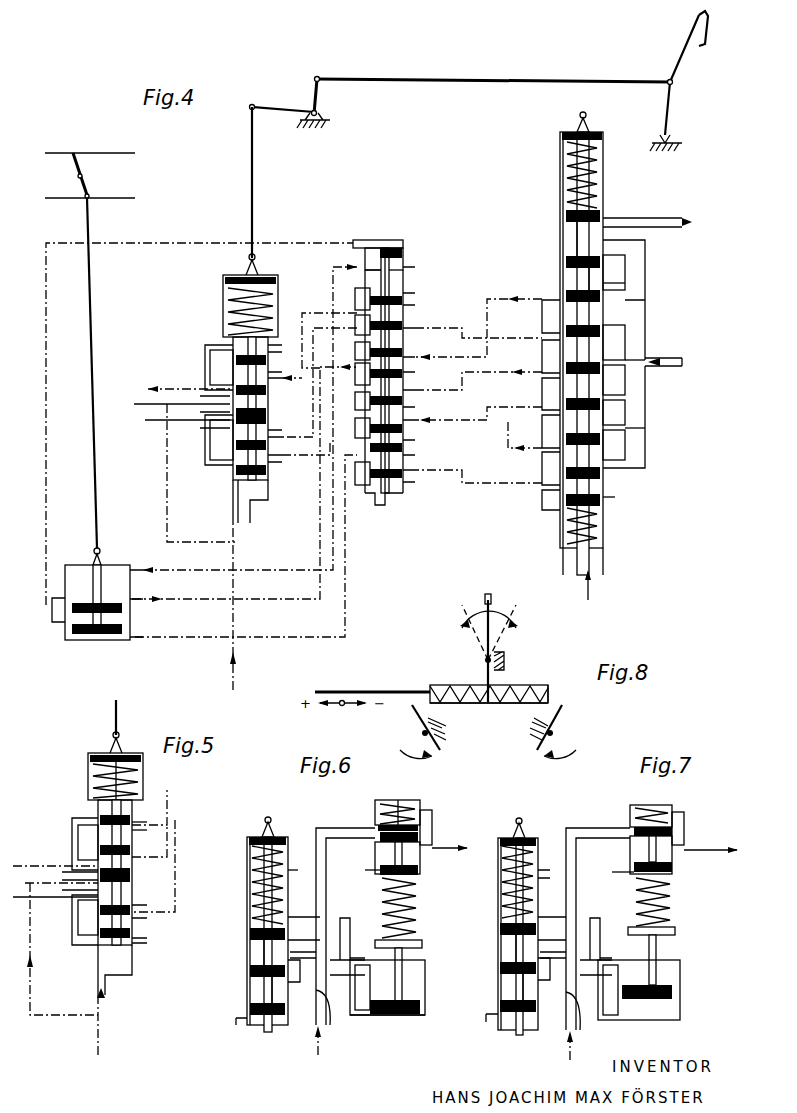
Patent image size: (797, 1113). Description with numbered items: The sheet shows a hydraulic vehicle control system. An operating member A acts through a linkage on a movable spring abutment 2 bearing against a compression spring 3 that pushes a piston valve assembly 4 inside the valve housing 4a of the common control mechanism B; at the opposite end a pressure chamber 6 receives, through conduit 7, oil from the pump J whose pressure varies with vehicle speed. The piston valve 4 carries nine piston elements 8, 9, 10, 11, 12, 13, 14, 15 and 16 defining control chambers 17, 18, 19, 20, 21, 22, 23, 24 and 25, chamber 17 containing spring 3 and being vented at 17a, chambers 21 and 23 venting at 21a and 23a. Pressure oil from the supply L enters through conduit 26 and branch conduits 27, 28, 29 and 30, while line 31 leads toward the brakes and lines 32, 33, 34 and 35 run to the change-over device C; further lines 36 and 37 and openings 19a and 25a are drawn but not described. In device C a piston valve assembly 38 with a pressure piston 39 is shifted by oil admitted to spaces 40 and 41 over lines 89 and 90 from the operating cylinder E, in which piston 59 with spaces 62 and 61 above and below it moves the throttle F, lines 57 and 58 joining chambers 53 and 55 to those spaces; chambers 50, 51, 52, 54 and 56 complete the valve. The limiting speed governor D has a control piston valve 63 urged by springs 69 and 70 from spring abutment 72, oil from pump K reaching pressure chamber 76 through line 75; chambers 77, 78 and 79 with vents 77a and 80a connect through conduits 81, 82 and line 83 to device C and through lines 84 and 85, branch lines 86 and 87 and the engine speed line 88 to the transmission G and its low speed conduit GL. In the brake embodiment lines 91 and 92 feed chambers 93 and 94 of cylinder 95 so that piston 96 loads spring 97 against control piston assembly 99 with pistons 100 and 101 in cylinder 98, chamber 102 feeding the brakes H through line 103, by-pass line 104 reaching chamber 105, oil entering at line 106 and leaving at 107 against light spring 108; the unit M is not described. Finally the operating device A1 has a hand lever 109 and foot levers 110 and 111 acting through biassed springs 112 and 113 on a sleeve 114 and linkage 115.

In FIG. 6, the movable spring abutment 2 is at (260, 838).
In FIG. 6, the compression spring 3 is at (252, 860).
In FIG. 4, the piston valve assembly 4 is at (576, 268).
In FIG. 6, the piston valve assembly 4 is at (268, 978).
In FIG. 7, the piston valve assembly 4 is at (518, 977).
In FIG. 4, the valve housing 4a is at (563, 250).
In FIG. 4, the pressure chamber 6 is at (566, 524).
In FIG. 4, the conduit 7 is at (593, 560).
In FIG. 4, the piston element 8 is at (563, 216).
In FIG. 6, the piston element 8 is at (287, 932).
In FIG. 7, the piston element 8 is at (500, 925).
In FIG. 4, the piston element 9 is at (614, 272).
In FIG. 6, the piston element 9 is at (297, 971).
In FIG. 7, the piston element 9 is at (546, 970).
In FIG. 4, the piston element 10 is at (597, 299).
In FIG. 6, the piston element 10 is at (287, 1010).
In FIG. 7, the piston element 10 is at (537, 1008).
In FIG. 4, the piston element 11 is at (597, 342).
In FIG. 4, the piston element 12 is at (597, 378).
In FIG. 4, the piston element 13 is at (597, 411).
In FIG. 4, the piston element 14 is at (597, 445).
In FIG. 4, the piston element 15 is at (597, 477).
In FIG. 4, the piston element 16 is at (601, 500).
In FIG. 6, the control chamber 17 is at (256, 903).
In FIG. 7, the control chamber 17 is at (526, 882).
In FIG. 4, the vent opening 17a is at (604, 173).
In FIG. 4, the control chamber 18 is at (563, 236).
In FIG. 6, the control chamber 18 is at (254, 950).
In FIG. 7, the control chamber 18 is at (504, 945).
In FIG. 6, the control chamber 19 is at (254, 993).
In FIG. 7, the control chamber 19 is at (504, 993).
In FIG. 4, the inlet passage 19a is at (612, 284).
In FIG. 6, the inlet passage 19a is at (339, 1011).
In FIG. 7, the inlet passage 19a is at (588, 1014).
In FIG. 4, the control chamber 20 is at (558, 316).
In FIG. 4, the control chamber 21 is at (558, 353).
In FIG. 4, the vent opening 21a is at (622, 359).
In FIG. 4, the control chamber 22 is at (558, 390).
In FIG. 4, the control chamber 23 is at (558, 427).
In FIG. 4, the vent opening 23a is at (612, 430).
In FIG. 4, the control chamber 24 is at (558, 462).
In FIG. 4, the control chamber 25 is at (558, 496).
In FIG. 4, the passage 25a is at (618, 497).
In FIG. 4, the conduit 26 is at (671, 367).
In FIG. 4, the branch conduit 27 is at (634, 248).
In FIG. 6, the branch conduit 27 is at (312, 944).
In FIG. 4, the branch conduit 28 is at (641, 324).
In FIG. 4, the branch conduit 29 is at (636, 398).
In FIG. 4, the branch conduit 30 is at (636, 462).
In FIG. 4, the line 31 is at (645, 222).
In FIG. 4, the line 32 is at (487, 298).
In FIG. 6, the line 32 is at (240, 1014).
In FIG. 4, the line 33 is at (500, 338).
In FIG. 4, the line 34 is at (500, 371).
In FIG. 4, the line 35 is at (500, 406).
In FIG. 4, the conduit 36 is at (505, 446).
In FIG. 4, the conduit 37 is at (493, 484).
In FIG. 4, the piston valve assembly 38 is at (392, 316).
In FIG. 4, the pressure piston 39 is at (395, 246).
In FIG. 4, the space 40 is at (380, 240).
In FIG. 4, the space 41 is at (400, 266).
In FIG. 4, the control chamber 50 is at (372, 299).
In FIG. 4, the control chamber 51 is at (372, 325).
In FIG. 4, the control chamber 52 is at (372, 351).
In FIG. 4, the control chamber 53 is at (372, 374).
In FIG. 4, the control chamber 54 is at (372, 401).
In FIG. 4, the control chamber 55 is at (372, 435).
In FIG. 4, the control chamber 56 is at (372, 472).
In FIG. 4, the line 57 is at (281, 575).
In FIG. 4, the line 58 is at (288, 638).
In FIG. 4, the piston 59 is at (60, 620).
In FIG. 4, the space 61 is at (104, 636).
In FIG. 4, the space 62 is at (78, 570).
In FIG. 4, the control piston valve assembly 63 is at (266, 380).
In FIG. 5, the control piston valve assembly 63 is at (124, 848).
In FIG. 5, the spring 69 is at (140, 768).
In FIG. 5, the spring 70 is at (130, 782).
In FIG. 5, the spring abutment 72 is at (134, 802).
In FIG. 5, the line 75 is at (104, 984).
In FIG. 5, the pressure chamber 76 is at (118, 958).
In FIG. 5, the control chamber 77 is at (100, 822).
In FIG. 5, the vent opening 77a is at (148, 822).
In FIG. 4, the control chamber 78 is at (235, 370).
In FIG. 5, the control chamber 78 is at (88, 842).
In FIG. 4, the control chamber 79 is at (235, 441).
In FIG. 5, the control chamber 79 is at (104, 903).
In FIG. 5, the vent opening 80a is at (149, 941).
In FIG. 4, the conduit 81 is at (304, 312).
In FIG. 5, the conduit 81 is at (184, 790).
In FIG. 4, the conduit 82 is at (312, 380).
In FIG. 5, the conduit 82 is at (188, 848).
In FIG. 4, the line 83 is at (305, 430).
In FIG. 5, the line 83 is at (176, 899).
In FIG. 4, the line 84 is at (175, 389).
In FIG. 5, the line 84 is at (33, 866).
In FIG. 4, the line 85 is at (187, 421).
In FIG. 5, the line 85 is at (50, 898).
In FIG. 5, the branch line 86 is at (74, 832).
In FIG. 5, the branch line 87 is at (74, 944).
In FIG. 4, the line 88 is at (168, 494).
In FIG. 5, the line 88 is at (31, 986).
In FIG. 4, the line 89 is at (46, 384).
In FIG. 4, the line 90 is at (200, 600).
In FIG. 6, the line 91 is at (340, 920).
In FIG. 7, the line 91 is at (591, 920).
In FIG. 6, the line 92 is at (342, 964).
In FIG. 7, the line 92 is at (592, 964).
In FIG. 6, the piston chamber 93 is at (413, 1016).
In FIG. 6, the piston chamber 94 is at (420, 964).
In FIG. 7, the piston chamber 94 is at (676, 968).
In FIG. 6, the cylinder 95 is at (425, 983).
In FIG. 7, the cylinder 95 is at (680, 1010).
In FIG. 6, the piston 96 is at (421, 1006).
In FIG. 7, the piston 96 is at (674, 990).
In FIG. 6, the spring 97 is at (418, 909).
In FIG. 7, the spring 97 is at (672, 896).
In FIG. 6, the cylinder 98 is at (376, 822).
In FIG. 6, the control piston assembly 99 is at (412, 852).
In FIG. 7, the control piston assembly 99 is at (665, 857).
In FIG. 6, the control piston 100 is at (415, 812).
In FIG. 6, the control piston 101 is at (418, 872).
In FIG. 6, the control chamber 102 is at (385, 849).
In FIG. 7, the control chamber 102 is at (640, 848).
In FIG. 6, the line 103 is at (442, 848).
In FIG. 7, the line 103 is at (703, 850).
In FIG. 6, the by-pass line 104 is at (432, 815).
In FIG. 7, the by-pass line 104 is at (678, 828).
In FIG. 6, the piston chamber 105 is at (376, 812).
In FIG. 7, the piston chamber 105 is at (632, 810).
In FIG. 6, the line 106 is at (328, 828).
In FIG. 7, the line 106 is at (584, 828).
In FIG. 6, the discharge 107 is at (368, 860).
In FIG. 7, the discharge 107 is at (630, 866).
In FIG. 6, the light spring 108 is at (402, 804).
In FIG. 8, the hand-lever 109 is at (486, 648).
In FIG. 8, the foot-operated lever 110 is at (414, 712).
In FIG. 8, the foot-operated lever 111 is at (560, 712).
In FIG. 8, the biassed spring 112 is at (456, 687).
In FIG. 8, the biassed spring 113 is at (508, 687).
In FIG. 8, the sleeve 114 is at (474, 704).
In FIG. 8, the linkage 115 is at (378, 690).
In FIG. 4, the operating member A is at (674, 115).
In FIG. 8, the operating device A1 is at (543, 647).
In FIG. 4, the common control mechanism B is at (560, 172).
In FIG. 6, the common control mechanism B is at (247, 880).
In FIG. 7, the common control mechanism B is at (498, 884).
In FIG. 4, the change-over device C is at (405, 296).
In FIG. 4, the limiting speed governor D is at (223, 307).
In FIG. 5, the limiting speed governor D is at (88, 773).
In FIG. 4, the operating cylinder E is at (85, 641).
In FIG. 4, the throttle F is at (80, 162).
In FIG. 4, the transmission G is at (138, 430).
In FIG. 5, the transmission G is at (50, 883).
In FIG. 4, the supply conduit GL is at (144, 389).
In FIG. 4, the vehicle brakes H is at (720, 222).
In FIG. 6, the vehicle brakes H is at (478, 848).
In FIG. 7, the vehicle brakes H is at (735, 872).
In FIG. 4, the oil pump J is at (588, 599).
In FIG. 4, the oil pump K is at (233, 618).
In FIG. 5, the oil pump K is at (98, 1037).
In FIG. 4, the supply of pressure fluid L is at (688, 362).
In FIG. 6, the supply of pressure fluid L is at (318, 1054).
In FIG. 7, the supply of pressure fluid L is at (570, 1059).
In FIG. 6, the valve M is at (365, 900).
In FIG. 7, the valve M is at (692, 920).